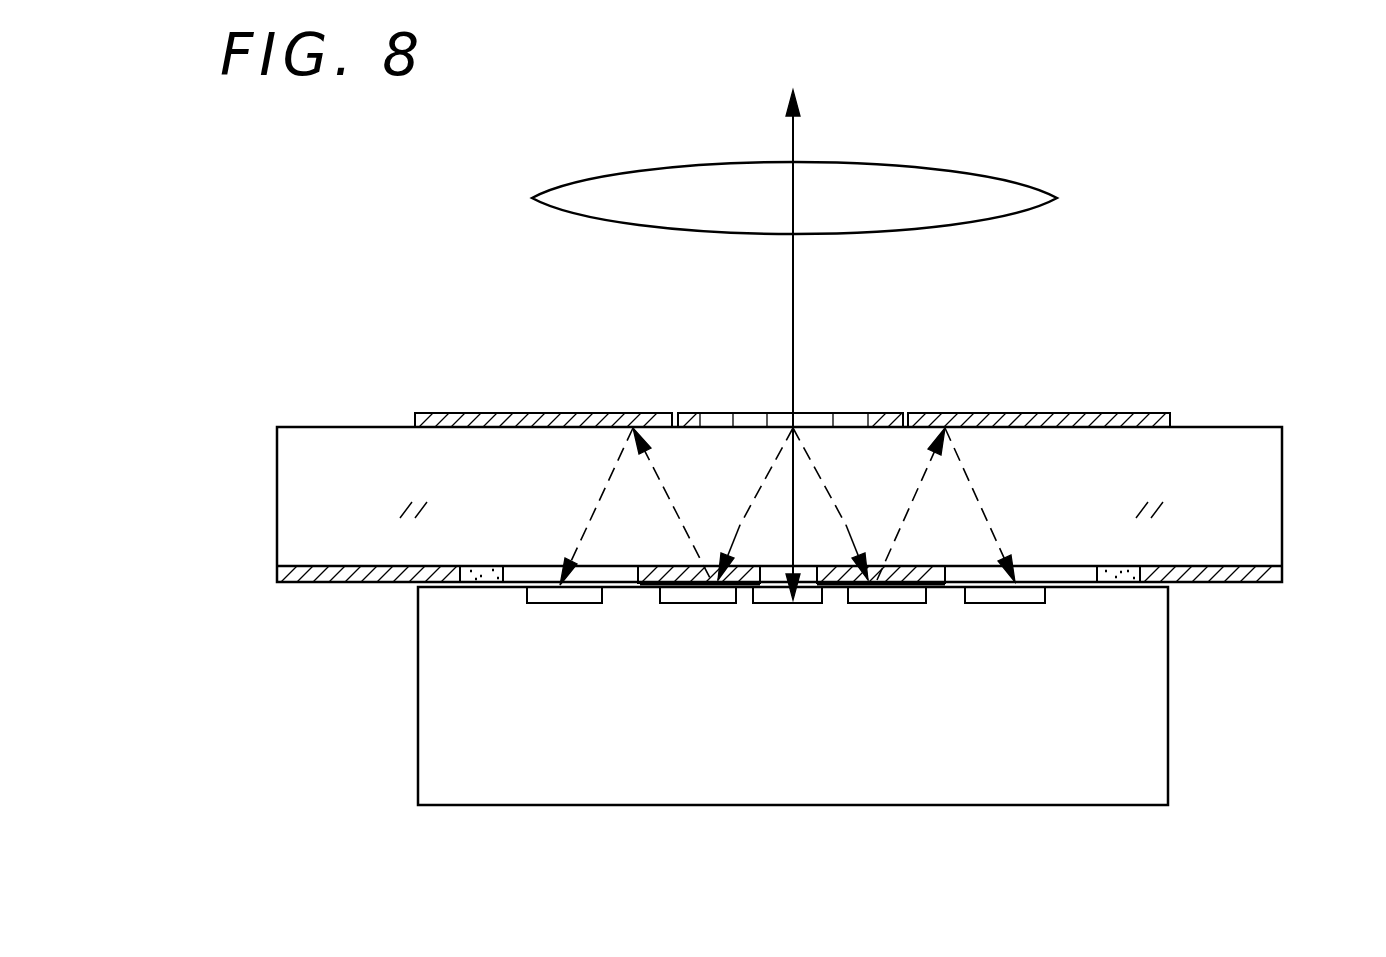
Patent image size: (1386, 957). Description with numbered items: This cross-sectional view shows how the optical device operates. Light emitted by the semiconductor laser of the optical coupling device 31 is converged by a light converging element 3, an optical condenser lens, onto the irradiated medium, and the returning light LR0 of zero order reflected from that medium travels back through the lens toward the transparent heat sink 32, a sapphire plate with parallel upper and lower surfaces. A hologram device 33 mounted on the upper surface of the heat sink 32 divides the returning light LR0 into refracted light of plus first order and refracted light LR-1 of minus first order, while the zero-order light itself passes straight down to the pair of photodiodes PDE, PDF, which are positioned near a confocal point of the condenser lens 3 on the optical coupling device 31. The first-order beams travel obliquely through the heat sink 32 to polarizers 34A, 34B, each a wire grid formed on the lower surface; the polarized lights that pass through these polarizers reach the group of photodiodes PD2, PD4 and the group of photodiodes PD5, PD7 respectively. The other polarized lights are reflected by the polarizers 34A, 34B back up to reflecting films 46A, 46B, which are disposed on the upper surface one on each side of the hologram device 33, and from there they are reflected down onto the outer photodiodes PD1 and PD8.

The light converging element 3 is at (960, 190).
The optical coupling device 31 is at (1152, 708).
The heat sink 32 is at (1257, 523).
The hologram device 33 is at (858, 413).
The polarizer 34A is at (620, 598).
The polarizer 34B is at (943, 590).
The reflecting film 46A is at (456, 413).
The reflecting film 46B is at (1130, 418).
The photodiode PD1 is at (538, 598).
The photodiode PD2 is at (697, 596).
The photodiode PD4 is at (690, 648).
The photodiode PD5 is at (888, 596).
The photodiode PD7 is at (890, 648).
The photodiode PD8 is at (1030, 598).
The photodiode PDE is at (768, 597).
The photodiode PDF is at (789, 685).
The returning light of zero order LR0 is at (793, 493).
The refracted light of -1st order LR-1 is at (742, 532).